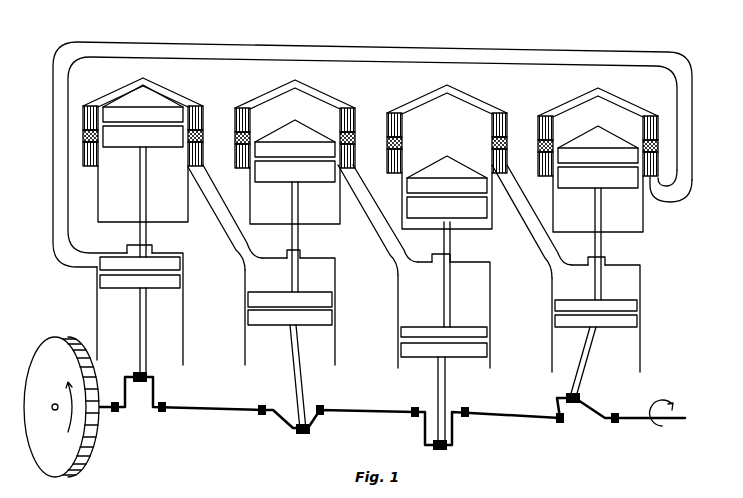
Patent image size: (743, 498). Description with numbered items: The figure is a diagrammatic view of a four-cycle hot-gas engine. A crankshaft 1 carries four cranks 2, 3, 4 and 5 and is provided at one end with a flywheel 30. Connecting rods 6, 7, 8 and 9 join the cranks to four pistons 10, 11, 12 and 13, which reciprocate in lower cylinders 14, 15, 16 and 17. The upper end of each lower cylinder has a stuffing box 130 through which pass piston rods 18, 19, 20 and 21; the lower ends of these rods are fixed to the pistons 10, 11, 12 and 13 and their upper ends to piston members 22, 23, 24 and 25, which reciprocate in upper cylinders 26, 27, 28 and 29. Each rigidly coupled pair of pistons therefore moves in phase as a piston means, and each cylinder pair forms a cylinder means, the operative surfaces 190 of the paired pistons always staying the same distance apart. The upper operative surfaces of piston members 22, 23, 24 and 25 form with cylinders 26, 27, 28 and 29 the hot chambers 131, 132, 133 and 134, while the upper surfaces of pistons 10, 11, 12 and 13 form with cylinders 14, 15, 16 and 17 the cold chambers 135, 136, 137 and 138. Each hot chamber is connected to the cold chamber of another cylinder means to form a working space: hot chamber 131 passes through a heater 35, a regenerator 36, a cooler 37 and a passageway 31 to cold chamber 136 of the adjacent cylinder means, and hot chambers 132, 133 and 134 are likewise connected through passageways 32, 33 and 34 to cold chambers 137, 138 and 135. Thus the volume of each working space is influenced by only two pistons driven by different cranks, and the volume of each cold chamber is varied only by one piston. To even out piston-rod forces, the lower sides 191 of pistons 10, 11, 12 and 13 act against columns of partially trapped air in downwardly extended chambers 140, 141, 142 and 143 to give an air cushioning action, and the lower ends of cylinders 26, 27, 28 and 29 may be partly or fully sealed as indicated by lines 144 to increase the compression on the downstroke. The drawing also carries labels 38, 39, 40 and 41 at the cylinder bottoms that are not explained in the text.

The crankshaft 1 is at (236, 410).
The crank 2 is at (152, 390).
The crank 3 is at (318, 426).
The crank 4 is at (465, 440).
The crank 5 is at (598, 410).
The connecting rod 6 is at (146, 337).
The connecting rod 7 is at (292, 371).
The connecting rod 8 is at (438, 382).
The connecting rod 9 is at (583, 374).
The piston 10 is at (100, 286).
The piston 11 is at (245, 318).
The piston 12 is at (398, 350).
The piston 13 is at (552, 330).
The cylinder 14 is at (183, 282).
The cylinder 15 is at (335, 282).
The cylinder 16 is at (490, 288).
The cylinder 17 is at (640, 290).
The piston rod 18 is at (140, 202).
The piston rod 19 is at (292, 209).
The piston rod 20 is at (444, 241).
The piston rod 21 is at (595, 249).
The piston member 22 is at (168, 112).
The piston member 23 is at (315, 130).
The piston member 24 is at (468, 120).
The piston member 25 is at (610, 145).
The cylinder 26 is at (98, 206).
The cylinder 27 is at (250, 195).
The cylinder 28 is at (400, 207).
The cylinder 29 is at (553, 205).
The flywheel 30 is at (48, 347).
The passageway 31 is at (215, 241).
The passageway 32 is at (365, 244).
The passageway 33 is at (515, 246).
The passageway 34 is at (495, 52).
The heater 35 is at (198, 114).
The regenerator 36 is at (199, 136).
The cooler 37 is at (666, 198).
The first cylinder bottom 38 is at (100, 222).
The second cylinder bottom 39 is at (255, 226).
The third cylinder bottom 40 is at (487, 229).
The fourth cylinder bottom 41 is at (640, 233).
The stuffing box 130 is at (130, 250).
The hot chamber 131 is at (115, 92).
The hot chamber 132 is at (272, 92).
The hot chamber 133 is at (420, 105).
The hot chamber 134 is at (568, 106).
The cold chamber 135 is at (183, 259).
The cold chamber 136 is at (243, 292).
The cold chamber 137 is at (398, 308).
The cold chamber 138 is at (640, 278).
The chamber 140 is at (183, 352).
The chamber 141 is at (335, 333).
The chamber 142 is at (490, 367).
The chamber 143 is at (640, 351).
The sealing lines 144 is at (157, 222).
The operative surface 190 is at (160, 92).
The lower side 191 is at (128, 296).